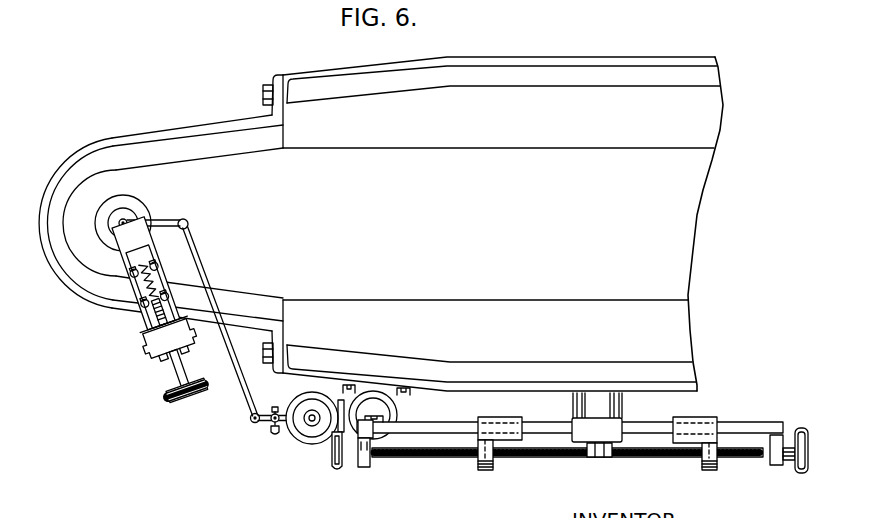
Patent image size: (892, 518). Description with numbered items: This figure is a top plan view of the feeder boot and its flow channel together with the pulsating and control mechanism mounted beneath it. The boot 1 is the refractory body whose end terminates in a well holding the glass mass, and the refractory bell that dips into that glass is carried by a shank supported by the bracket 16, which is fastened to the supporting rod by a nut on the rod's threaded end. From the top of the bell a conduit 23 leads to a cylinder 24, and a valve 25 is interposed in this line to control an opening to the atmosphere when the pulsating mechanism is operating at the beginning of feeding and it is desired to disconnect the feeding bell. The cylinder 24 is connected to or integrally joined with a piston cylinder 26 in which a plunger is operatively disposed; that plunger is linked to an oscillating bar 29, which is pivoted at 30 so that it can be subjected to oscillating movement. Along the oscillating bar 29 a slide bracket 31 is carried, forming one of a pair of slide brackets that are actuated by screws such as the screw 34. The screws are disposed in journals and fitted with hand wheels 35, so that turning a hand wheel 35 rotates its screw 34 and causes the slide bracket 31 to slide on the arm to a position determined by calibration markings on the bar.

The boot 1 is at (197, 147).
The bracket 16 is at (133, 290).
The conduit 23 is at (203, 270).
The cylinder 24 is at (310, 445).
The valve 25 is at (273, 436).
The piston cylinder 26 is at (400, 412).
The oscillating bar 29 is at (440, 429).
The pivot 30 is at (598, 460).
The slide bracket 31 is at (484, 471).
The screw 34 is at (380, 438).
The hand wheel 35 is at (345, 472).